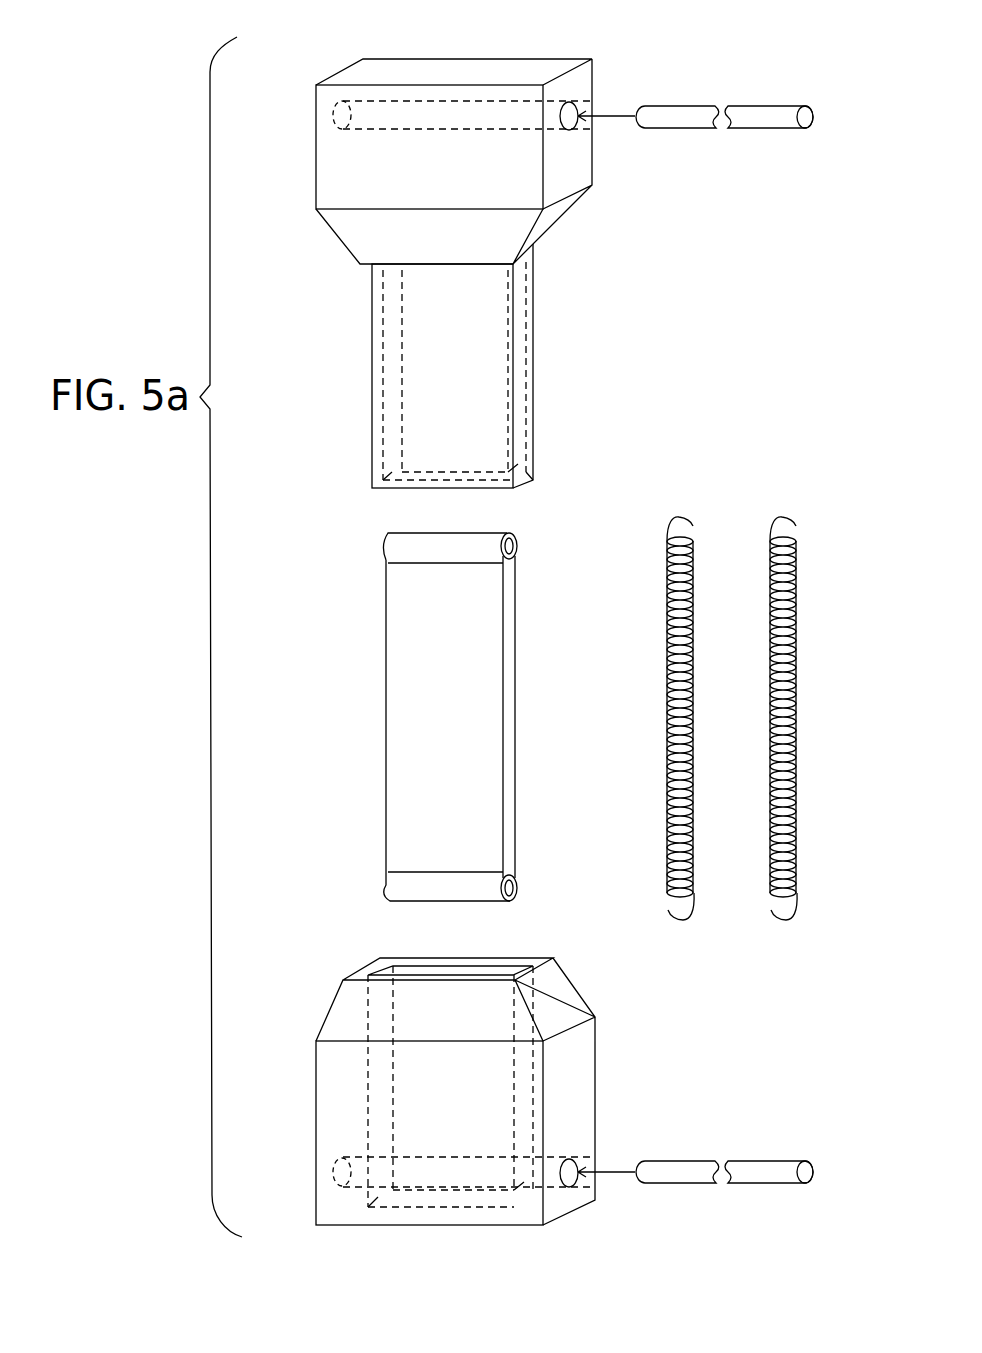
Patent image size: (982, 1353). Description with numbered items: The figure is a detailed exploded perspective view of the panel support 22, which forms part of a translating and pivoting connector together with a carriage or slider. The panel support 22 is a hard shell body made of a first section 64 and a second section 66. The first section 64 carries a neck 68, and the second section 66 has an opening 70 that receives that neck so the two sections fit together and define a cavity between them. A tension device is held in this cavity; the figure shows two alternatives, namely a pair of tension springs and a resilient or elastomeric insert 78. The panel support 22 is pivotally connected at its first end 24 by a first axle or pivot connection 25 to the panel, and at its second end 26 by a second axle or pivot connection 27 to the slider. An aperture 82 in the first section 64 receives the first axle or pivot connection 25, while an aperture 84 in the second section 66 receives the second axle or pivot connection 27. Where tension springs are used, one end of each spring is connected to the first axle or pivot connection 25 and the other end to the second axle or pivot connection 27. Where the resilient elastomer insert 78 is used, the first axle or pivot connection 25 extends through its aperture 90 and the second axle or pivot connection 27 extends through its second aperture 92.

The panel support 22 is at (762, 197).
The first end 24 is at (500, 250).
The first axle or pivot connection 25 is at (753, 108).
The second end 26 is at (496, 1102).
The second axle or pivot connection 27 is at (753, 1165).
The first section 64 is at (570, 167).
The second section 66 is at (578, 1092).
The neck 68 is at (528, 360).
The opening 70 is at (410, 968).
The resilient or elastomeric insert 78 is at (457, 718).
The aperture 82 is at (580, 112).
The aperture 84 is at (578, 1182).
The aperture of the resilient elastomer insert 90 is at (517, 545).
The second aperture of the resilient elastomer insert 92 is at (517, 890).